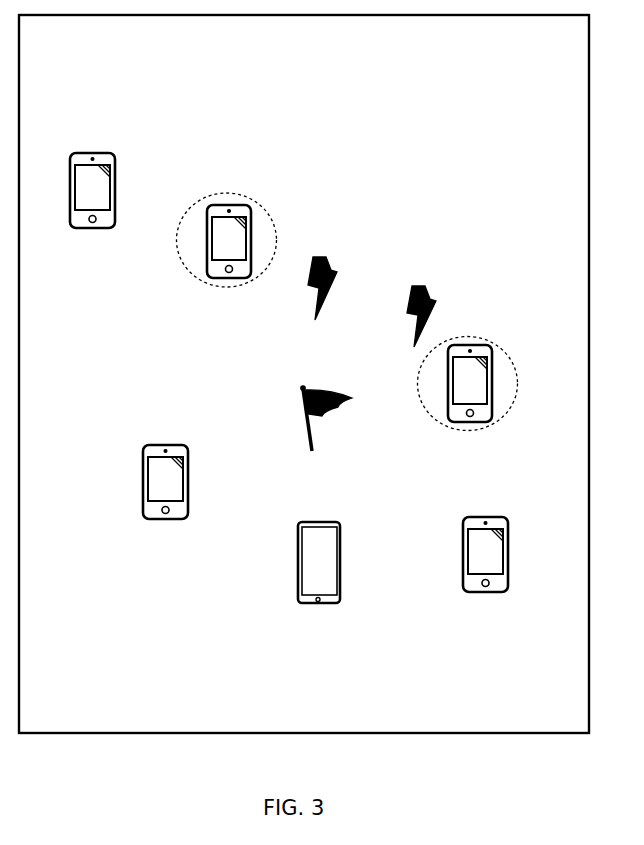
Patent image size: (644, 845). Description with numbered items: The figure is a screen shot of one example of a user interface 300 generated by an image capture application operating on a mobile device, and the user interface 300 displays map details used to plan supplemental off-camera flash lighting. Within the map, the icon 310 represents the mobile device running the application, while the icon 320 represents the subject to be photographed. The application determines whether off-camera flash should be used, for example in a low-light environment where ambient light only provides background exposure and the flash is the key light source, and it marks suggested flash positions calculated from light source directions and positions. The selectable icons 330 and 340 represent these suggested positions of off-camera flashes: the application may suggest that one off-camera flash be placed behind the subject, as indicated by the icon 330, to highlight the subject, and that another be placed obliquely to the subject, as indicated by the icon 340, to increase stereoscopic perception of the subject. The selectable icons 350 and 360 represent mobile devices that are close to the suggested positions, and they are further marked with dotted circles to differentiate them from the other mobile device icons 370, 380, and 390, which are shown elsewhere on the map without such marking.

The user interface 300 is at (103, 55).
The icon 310 is at (322, 603).
The icon 320 is at (318, 455).
The selectable icon 330 is at (322, 250).
The selectable icon 340 is at (430, 280).
The selectable icon 350 is at (223, 193).
The selectable icon 360 is at (460, 337).
The icon 370 is at (88, 153).
The icon 380 is at (167, 519).
The icon 390 is at (488, 592).